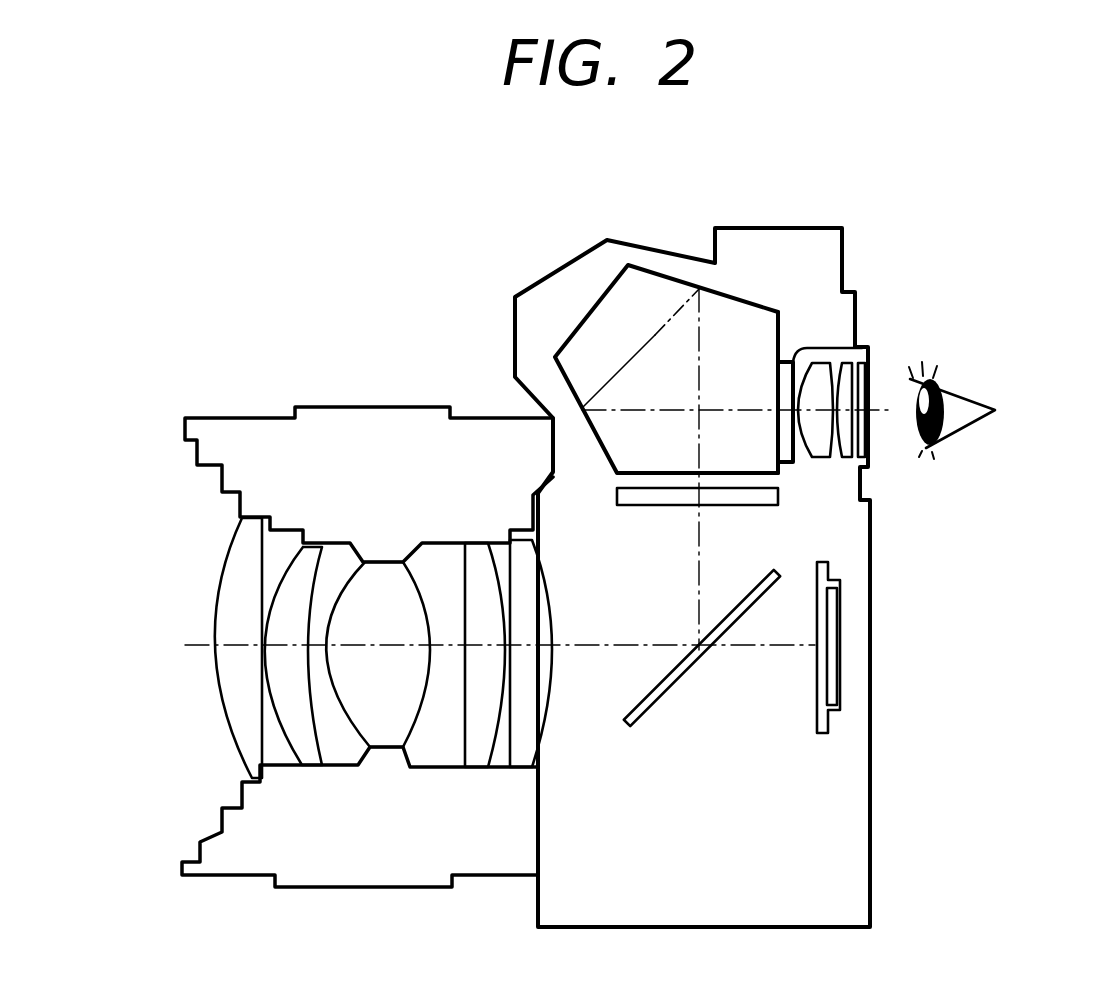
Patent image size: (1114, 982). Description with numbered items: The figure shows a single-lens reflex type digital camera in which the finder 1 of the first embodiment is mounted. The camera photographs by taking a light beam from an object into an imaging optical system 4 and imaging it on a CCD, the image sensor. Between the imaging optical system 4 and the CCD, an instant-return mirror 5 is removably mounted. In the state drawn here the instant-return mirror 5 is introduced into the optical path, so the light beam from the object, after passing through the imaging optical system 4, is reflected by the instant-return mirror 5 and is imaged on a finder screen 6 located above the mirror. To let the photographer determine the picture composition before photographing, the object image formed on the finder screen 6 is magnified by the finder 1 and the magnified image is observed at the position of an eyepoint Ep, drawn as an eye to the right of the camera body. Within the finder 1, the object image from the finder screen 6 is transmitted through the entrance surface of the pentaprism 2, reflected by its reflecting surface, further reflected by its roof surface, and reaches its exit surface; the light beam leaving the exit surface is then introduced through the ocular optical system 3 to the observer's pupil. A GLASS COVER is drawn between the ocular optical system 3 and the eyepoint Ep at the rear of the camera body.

The finder 1 is at (762, 174).
The pentaprism 2 is at (640, 290).
The ocular optical system 3 is at (828, 347).
The imaging optical system 4 is at (527, 805).
The instant-return mirror 5 is at (657, 692).
The finder screen 6 is at (632, 498).
The eyepoint Ep is at (913, 416).
The CCD (image sensor) CCD is at (823, 572).
The glass cover GLASS COVER is at (866, 376).